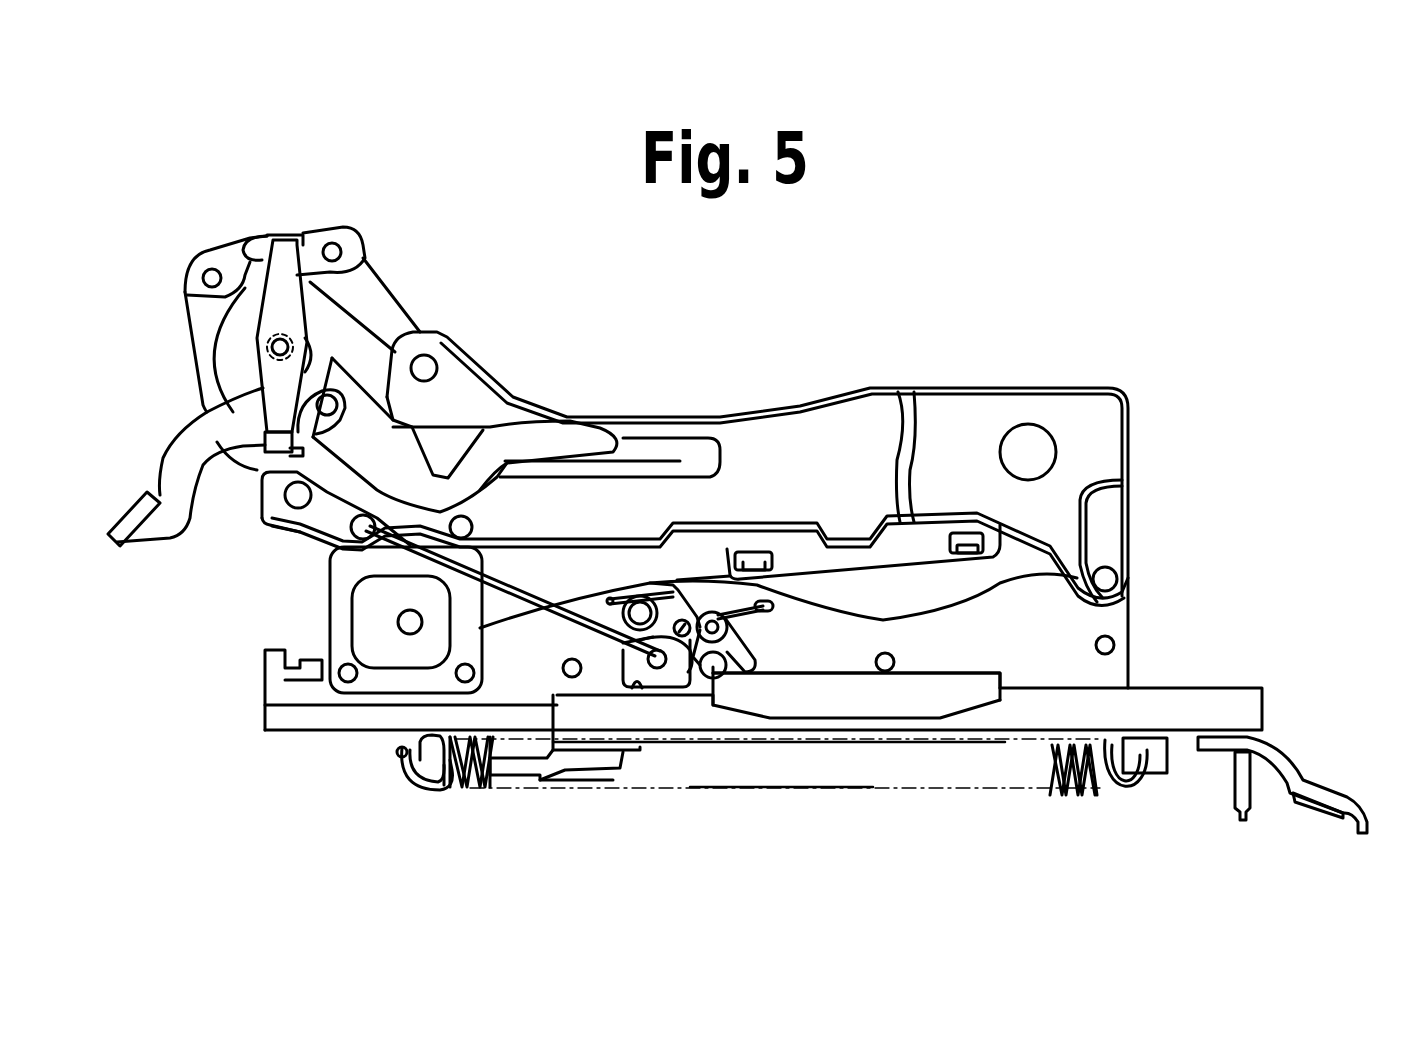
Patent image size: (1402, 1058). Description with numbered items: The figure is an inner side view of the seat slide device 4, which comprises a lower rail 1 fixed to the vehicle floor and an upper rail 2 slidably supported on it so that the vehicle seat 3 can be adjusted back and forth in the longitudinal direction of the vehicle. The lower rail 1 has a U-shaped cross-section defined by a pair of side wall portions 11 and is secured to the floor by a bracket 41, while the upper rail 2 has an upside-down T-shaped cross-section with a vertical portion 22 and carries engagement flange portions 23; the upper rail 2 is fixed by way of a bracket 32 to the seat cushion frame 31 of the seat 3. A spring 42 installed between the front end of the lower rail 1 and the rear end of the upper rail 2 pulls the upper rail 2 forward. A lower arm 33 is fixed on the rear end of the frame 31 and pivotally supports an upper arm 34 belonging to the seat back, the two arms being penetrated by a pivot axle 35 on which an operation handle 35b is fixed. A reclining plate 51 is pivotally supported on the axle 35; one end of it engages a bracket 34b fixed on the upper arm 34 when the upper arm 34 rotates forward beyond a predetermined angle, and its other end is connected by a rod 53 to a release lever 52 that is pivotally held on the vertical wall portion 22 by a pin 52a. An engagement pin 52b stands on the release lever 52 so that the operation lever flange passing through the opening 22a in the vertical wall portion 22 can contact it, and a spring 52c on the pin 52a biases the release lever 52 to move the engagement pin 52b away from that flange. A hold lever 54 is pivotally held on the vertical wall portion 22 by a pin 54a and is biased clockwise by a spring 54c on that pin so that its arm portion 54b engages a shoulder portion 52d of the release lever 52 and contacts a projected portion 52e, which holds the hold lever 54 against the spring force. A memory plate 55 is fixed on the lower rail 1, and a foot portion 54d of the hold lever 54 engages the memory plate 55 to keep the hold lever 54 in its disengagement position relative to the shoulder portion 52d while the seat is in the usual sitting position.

The lower rail 1 is at (1247, 686).
The upper rail 2 is at (272, 745).
The vehicle seat 3 is at (1066, 356).
The seat slide device 4 is at (1152, 630).
The side wall portion 11 is at (1007, 725).
The vertical portion 22 is at (520, 690).
The opening 22a is at (639, 688).
The engagement flange portion 23 is at (345, 720).
The seat cushion frame 31 is at (970, 425).
The bracket 32 is at (360, 603).
The lower arm 33 is at (232, 330).
The upper arm 34 is at (368, 275).
The bracket 34b is at (268, 235).
The pivot axle 35 is at (290, 342).
The operation handle 35b is at (372, 433).
The bracket 41 is at (1270, 746).
The spring 42 is at (1063, 772).
The reclining plate 51 is at (255, 378).
The release lever 52 is at (663, 575).
The pin 52a is at (657, 668).
The engagement pin 52b is at (700, 613).
The spring 52c is at (627, 590).
The shoulder portion 52d is at (730, 605).
The projected portion 52e is at (727, 672).
The rod 53 is at (520, 595).
The hold lever 54 is at (745, 662).
The pin 54a is at (760, 592).
The arm portion 54b is at (690, 642).
The spring 54c is at (850, 445).
The foot portion 54d is at (760, 672).
The memory plate 55 is at (907, 688).